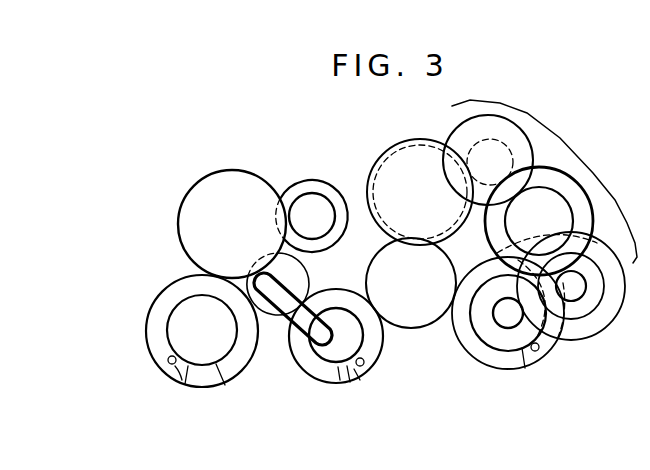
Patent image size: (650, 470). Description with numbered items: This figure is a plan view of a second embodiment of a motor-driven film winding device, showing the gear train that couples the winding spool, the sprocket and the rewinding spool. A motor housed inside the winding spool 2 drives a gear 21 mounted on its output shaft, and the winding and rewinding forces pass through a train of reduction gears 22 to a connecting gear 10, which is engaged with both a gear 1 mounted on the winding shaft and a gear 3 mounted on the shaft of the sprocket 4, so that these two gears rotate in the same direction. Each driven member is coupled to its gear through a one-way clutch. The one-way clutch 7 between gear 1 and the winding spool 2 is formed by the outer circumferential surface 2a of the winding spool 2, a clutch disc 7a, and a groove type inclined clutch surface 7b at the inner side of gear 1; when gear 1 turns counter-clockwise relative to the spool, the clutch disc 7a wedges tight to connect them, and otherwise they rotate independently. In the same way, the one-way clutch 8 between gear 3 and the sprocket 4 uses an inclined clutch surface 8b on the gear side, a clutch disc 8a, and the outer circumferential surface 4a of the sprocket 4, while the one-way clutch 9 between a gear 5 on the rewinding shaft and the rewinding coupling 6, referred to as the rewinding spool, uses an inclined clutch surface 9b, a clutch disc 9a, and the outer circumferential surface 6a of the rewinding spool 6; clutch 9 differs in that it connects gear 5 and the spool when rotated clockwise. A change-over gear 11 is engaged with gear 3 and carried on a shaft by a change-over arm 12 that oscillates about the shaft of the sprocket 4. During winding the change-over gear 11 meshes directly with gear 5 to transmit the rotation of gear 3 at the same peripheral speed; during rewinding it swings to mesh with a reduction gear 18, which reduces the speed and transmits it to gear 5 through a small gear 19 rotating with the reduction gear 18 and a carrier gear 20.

The gear 1 is at (502, 327).
The winding spool 2 is at (476, 343).
The outer circumferential surface 2a is at (525, 368).
The gear 3 is at (313, 378).
The sprocket 4 is at (363, 340).
The outer circumferential surface 4a is at (338, 367).
The gear 5 is at (243, 372).
The rewinding coupling 6 is at (168, 322).
The outer circumferential surface 6a is at (225, 385).
The one-way clutch 7 is at (547, 357).
The clutch disc 7a is at (541, 344).
The inclined clutch surface 7b is at (537, 352).
The one-way clutch 8 is at (347, 366).
The clutch disc 8a is at (365, 365).
The inclined clutch surface 8b is at (354, 369).
The one-way clutch 9 is at (185, 384).
The clutch disc 9a is at (167, 362).
The inclined clutch surface 9b is at (178, 368).
The connecting gear 10 is at (442, 322).
The change-over gear 11 is at (277, 316).
The change-over arm 12 is at (290, 310).
The reduction gear 18 is at (330, 190).
The small gear 19 is at (308, 200).
The carrier gear 20 is at (232, 176).
The gear 21 is at (488, 337).
The train of reduction gears 22 is at (566, 136).